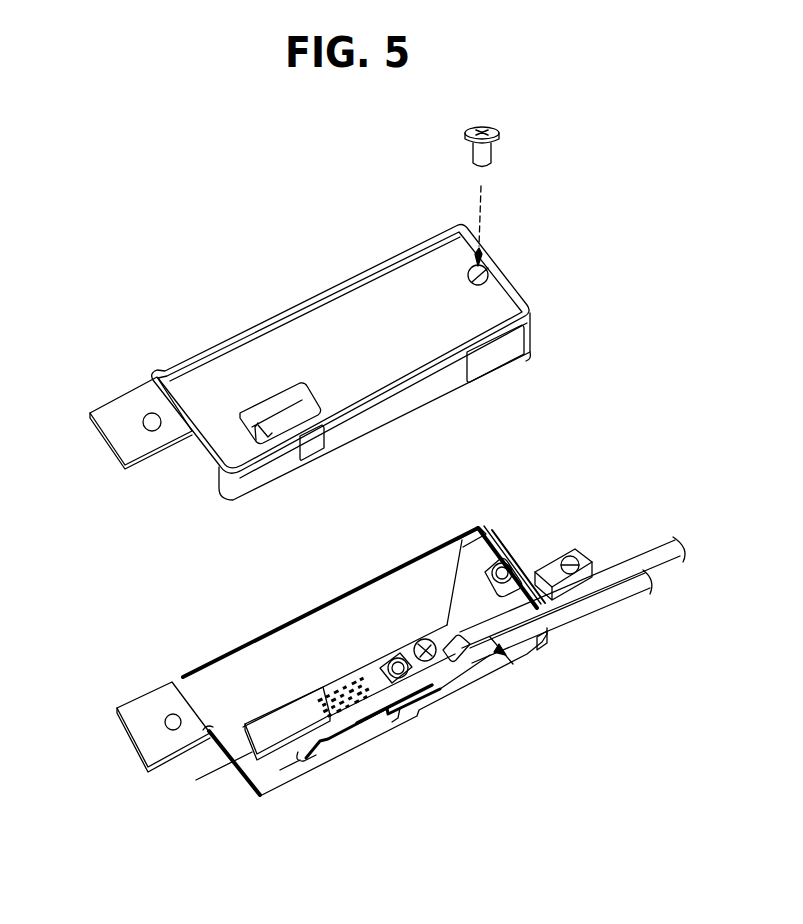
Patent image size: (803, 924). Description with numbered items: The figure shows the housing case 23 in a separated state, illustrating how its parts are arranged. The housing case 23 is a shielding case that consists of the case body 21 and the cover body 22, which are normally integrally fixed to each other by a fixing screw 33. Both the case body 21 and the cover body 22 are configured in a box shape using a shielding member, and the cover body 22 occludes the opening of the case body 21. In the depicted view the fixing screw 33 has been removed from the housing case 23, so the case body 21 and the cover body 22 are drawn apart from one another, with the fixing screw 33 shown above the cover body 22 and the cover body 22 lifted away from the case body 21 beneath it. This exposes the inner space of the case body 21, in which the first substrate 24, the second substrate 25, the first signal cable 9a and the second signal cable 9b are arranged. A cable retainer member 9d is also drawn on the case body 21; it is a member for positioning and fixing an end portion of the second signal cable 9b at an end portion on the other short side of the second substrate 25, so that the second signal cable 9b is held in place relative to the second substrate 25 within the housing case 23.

The fixing screw 33 is at (486, 150).
The housing case 23 is at (111, 495).
The cover body 22 is at (197, 462).
The case body 21 is at (153, 683).
The first substrate 24 is at (320, 632).
The second substrate 25 is at (270, 728).
The cable retainer member 9d is at (410, 653).
The first signal cable 9a is at (662, 560).
The second signal cable 9b is at (625, 583).